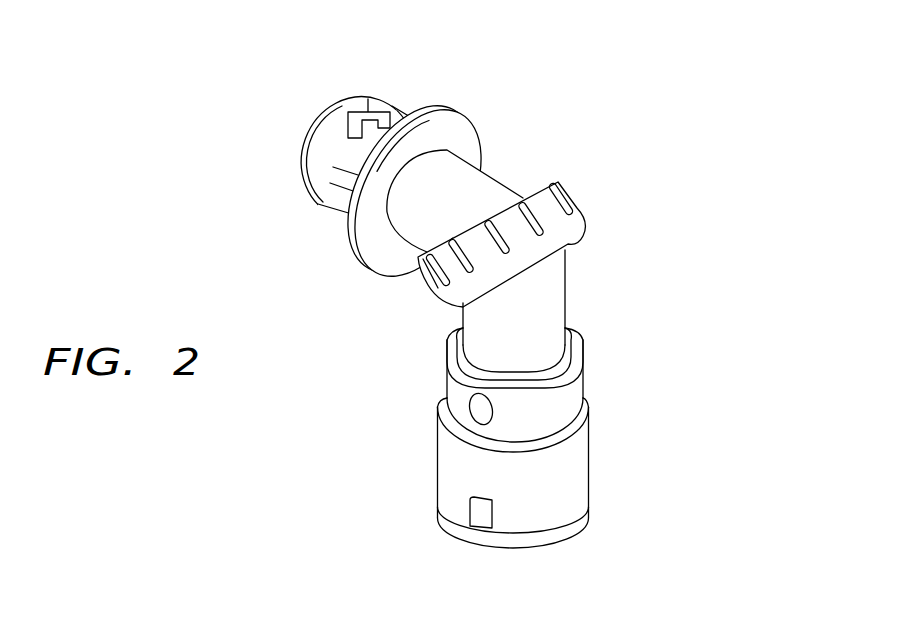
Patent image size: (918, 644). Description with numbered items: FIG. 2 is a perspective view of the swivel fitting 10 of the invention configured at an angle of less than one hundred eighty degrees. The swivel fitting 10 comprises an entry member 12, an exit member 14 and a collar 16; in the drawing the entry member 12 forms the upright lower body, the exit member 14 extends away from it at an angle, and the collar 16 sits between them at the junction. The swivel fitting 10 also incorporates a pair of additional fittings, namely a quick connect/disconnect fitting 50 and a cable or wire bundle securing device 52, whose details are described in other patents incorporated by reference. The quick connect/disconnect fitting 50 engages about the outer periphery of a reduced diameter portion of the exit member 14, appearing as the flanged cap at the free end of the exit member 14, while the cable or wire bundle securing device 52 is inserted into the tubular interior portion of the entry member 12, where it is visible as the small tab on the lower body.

The swivel fitting 10 is at (543, 302).
The entry member 12 is at (447, 367).
The exit member 14 is at (487, 203).
The collar 16 is at (567, 192).
The quick connect/disconnect fitting 50 is at (387, 113).
The cable or wire bundle securing device 52 is at (471, 508).